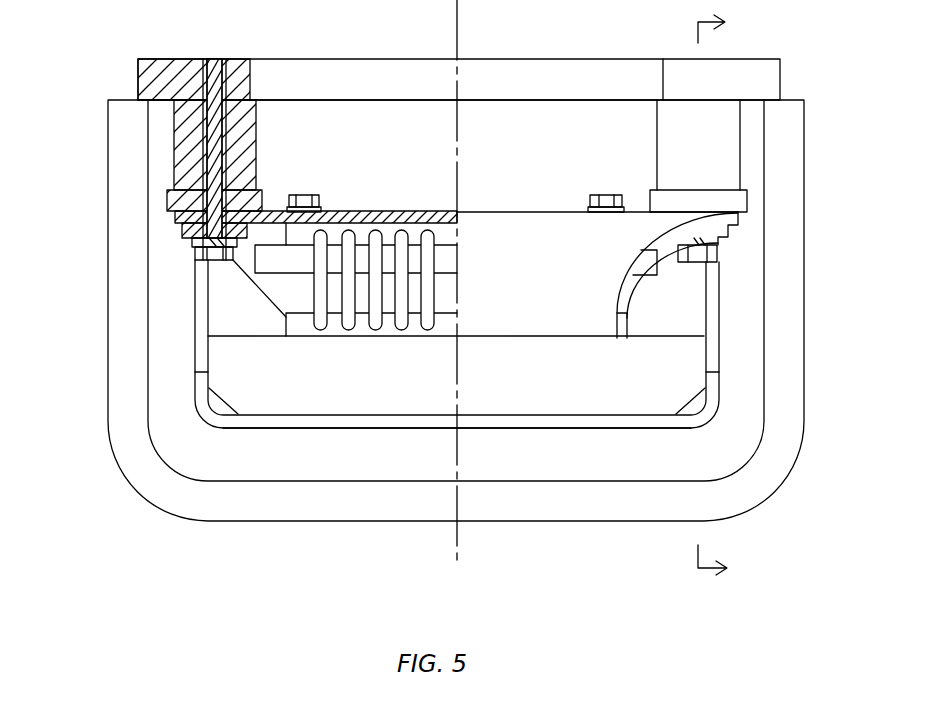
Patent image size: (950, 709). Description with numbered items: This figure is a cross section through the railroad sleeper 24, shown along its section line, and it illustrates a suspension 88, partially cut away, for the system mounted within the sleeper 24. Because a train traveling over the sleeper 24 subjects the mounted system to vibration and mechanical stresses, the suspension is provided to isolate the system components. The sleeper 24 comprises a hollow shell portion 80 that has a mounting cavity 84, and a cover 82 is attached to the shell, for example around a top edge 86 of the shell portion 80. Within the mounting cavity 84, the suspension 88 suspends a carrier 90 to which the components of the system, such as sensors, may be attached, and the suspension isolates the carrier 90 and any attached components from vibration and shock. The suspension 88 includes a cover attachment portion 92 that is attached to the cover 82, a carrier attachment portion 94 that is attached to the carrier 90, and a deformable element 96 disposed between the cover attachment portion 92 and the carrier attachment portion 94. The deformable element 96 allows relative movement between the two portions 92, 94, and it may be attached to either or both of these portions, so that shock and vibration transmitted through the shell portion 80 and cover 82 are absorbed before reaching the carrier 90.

The railroad sleeper 24 is at (107, 49).
The hollow shell portion 80 is at (805, 222).
The cover 82 is at (763, 59).
The mounting cavity 84 is at (521, 138).
The top edge 86 is at (792, 100).
The suspension 88 is at (752, 355).
The carrier 90 is at (508, 429).
The cover attachment portion 92 is at (764, 182).
The carrier attachment portion 94 is at (288, 371).
The deformable element 96 is at (314, 292).